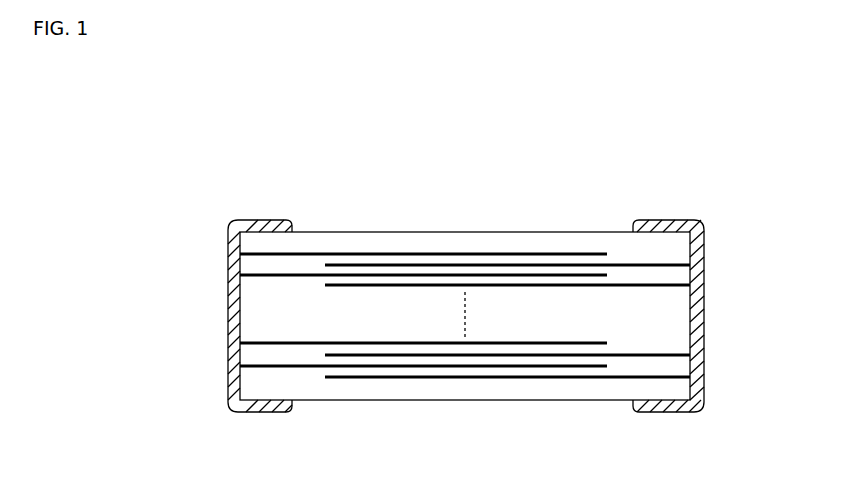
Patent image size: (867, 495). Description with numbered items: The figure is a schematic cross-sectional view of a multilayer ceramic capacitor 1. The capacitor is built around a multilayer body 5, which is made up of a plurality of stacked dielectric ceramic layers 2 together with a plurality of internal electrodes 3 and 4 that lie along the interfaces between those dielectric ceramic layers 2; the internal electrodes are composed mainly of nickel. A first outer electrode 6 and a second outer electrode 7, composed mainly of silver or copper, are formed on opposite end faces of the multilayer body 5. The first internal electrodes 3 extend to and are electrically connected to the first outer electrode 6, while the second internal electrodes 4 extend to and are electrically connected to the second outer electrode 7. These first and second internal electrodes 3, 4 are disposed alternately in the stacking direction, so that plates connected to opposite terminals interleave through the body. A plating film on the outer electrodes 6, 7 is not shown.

The multilayer ceramic capacitor 1 is at (251, 138).
The dielectric ceramic layers 2 is at (490, 268).
The first internal electrodes 3 is at (392, 268).
The second internal electrodes 4 is at (550, 355).
The multilayer body 5 is at (580, 232).
The first outer electrode 6 is at (236, 299).
The second outer electrode 7 is at (697, 298).